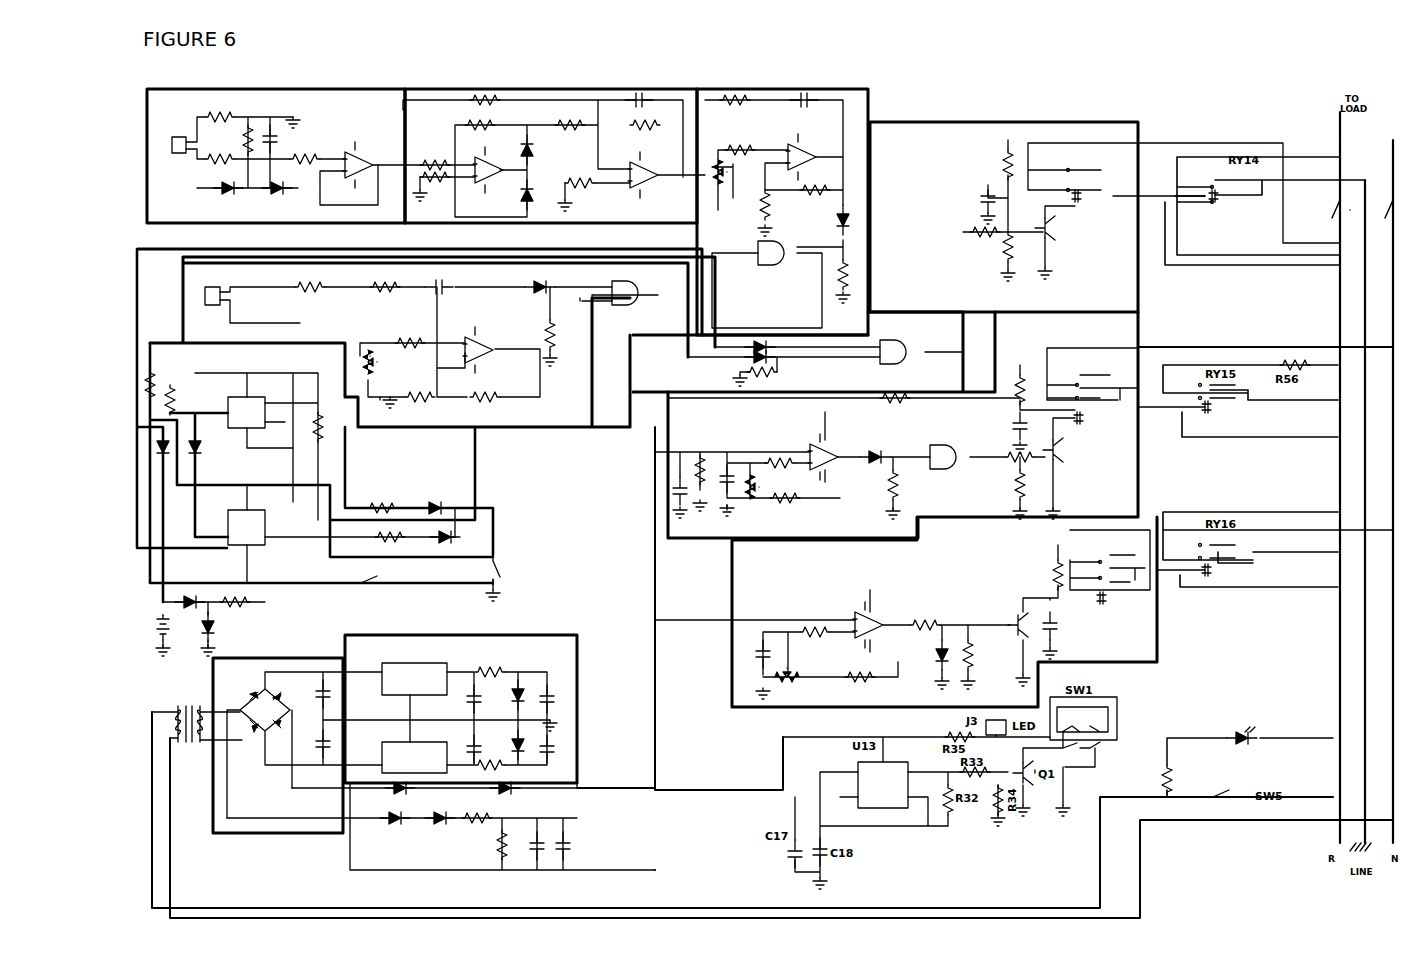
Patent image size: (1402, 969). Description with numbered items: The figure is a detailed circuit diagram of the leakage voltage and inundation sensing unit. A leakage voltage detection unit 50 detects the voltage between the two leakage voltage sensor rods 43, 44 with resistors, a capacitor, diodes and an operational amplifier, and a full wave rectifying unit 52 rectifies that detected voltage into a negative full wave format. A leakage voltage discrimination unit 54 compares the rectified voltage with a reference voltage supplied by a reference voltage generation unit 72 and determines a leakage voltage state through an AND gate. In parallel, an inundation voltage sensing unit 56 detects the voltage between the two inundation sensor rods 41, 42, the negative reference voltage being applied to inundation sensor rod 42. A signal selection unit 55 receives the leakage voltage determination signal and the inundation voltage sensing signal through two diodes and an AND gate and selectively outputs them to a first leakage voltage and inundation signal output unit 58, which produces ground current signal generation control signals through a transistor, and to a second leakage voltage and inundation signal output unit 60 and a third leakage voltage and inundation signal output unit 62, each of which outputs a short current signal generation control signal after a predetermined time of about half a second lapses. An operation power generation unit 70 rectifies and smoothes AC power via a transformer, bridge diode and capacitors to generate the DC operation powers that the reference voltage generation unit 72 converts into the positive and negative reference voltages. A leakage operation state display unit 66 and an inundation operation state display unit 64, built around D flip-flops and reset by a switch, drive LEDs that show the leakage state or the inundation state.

The leakage voltage detection unit 50 is at (325, 223).
The full wave rectifying unit 52 is at (654, 224).
The leakage voltage discrimination unit 54 is at (868, 92).
The signal selection unit 55 is at (650, 395).
The inundation voltage sensing unit 56 is at (556, 429).
The first leakage voltage and inundation signal output unit 58 is at (945, 122).
The second leakage voltage and inundation signal output unit 60 is at (1140, 462).
The third leakage voltage and inundation signal output unit 62 is at (1157, 632).
The inundation operation state display unit 64 is at (475, 470).
The leakage operation state display unit 66 is at (310, 585).
The operation power generation unit 70 is at (213, 684).
The reference voltage generation unit 72 is at (408, 632).
The inundation sensor rod 41 is at (193, 292).
The inundation sensor rod 42 is at (193, 303).
The leakage voltage sensor rod 43 is at (154, 142).
The leakage voltage sensor rod 44 is at (155, 153).